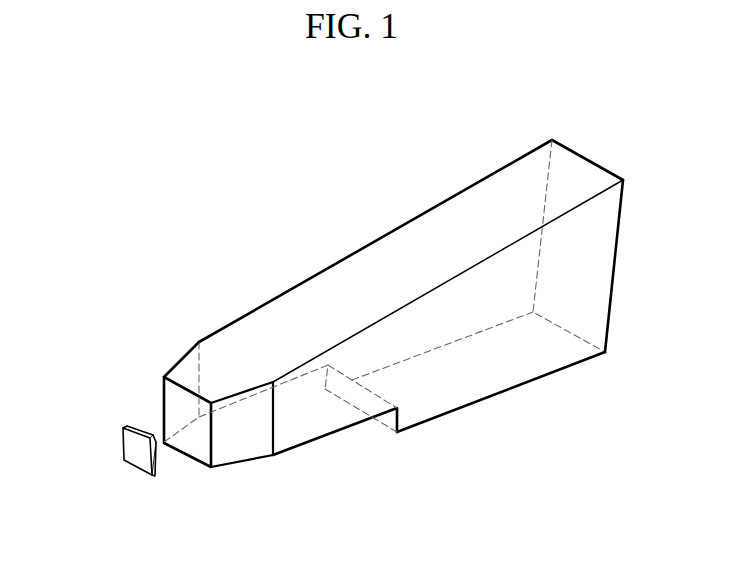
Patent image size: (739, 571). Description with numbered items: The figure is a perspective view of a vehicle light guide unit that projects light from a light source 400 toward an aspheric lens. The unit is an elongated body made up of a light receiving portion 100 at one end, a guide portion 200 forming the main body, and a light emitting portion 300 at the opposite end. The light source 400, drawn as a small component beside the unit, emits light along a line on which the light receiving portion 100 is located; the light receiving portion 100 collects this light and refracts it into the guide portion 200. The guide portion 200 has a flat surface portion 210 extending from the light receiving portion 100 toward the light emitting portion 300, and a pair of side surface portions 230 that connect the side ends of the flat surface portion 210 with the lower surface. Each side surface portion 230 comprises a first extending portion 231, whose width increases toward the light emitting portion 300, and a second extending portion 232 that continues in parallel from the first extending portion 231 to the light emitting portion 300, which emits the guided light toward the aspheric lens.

The light receiving portion 100 is at (170, 402).
The guide portion 200 is at (443, 200).
The flat surface portion 210 is at (367, 288).
The light emitting portion 300 is at (597, 158).
The side surface portions 230 is at (535, 507).
The first extending portion 231 is at (255, 423).
The second extending portion 232 is at (527, 338).
The light source 400 is at (137, 450).